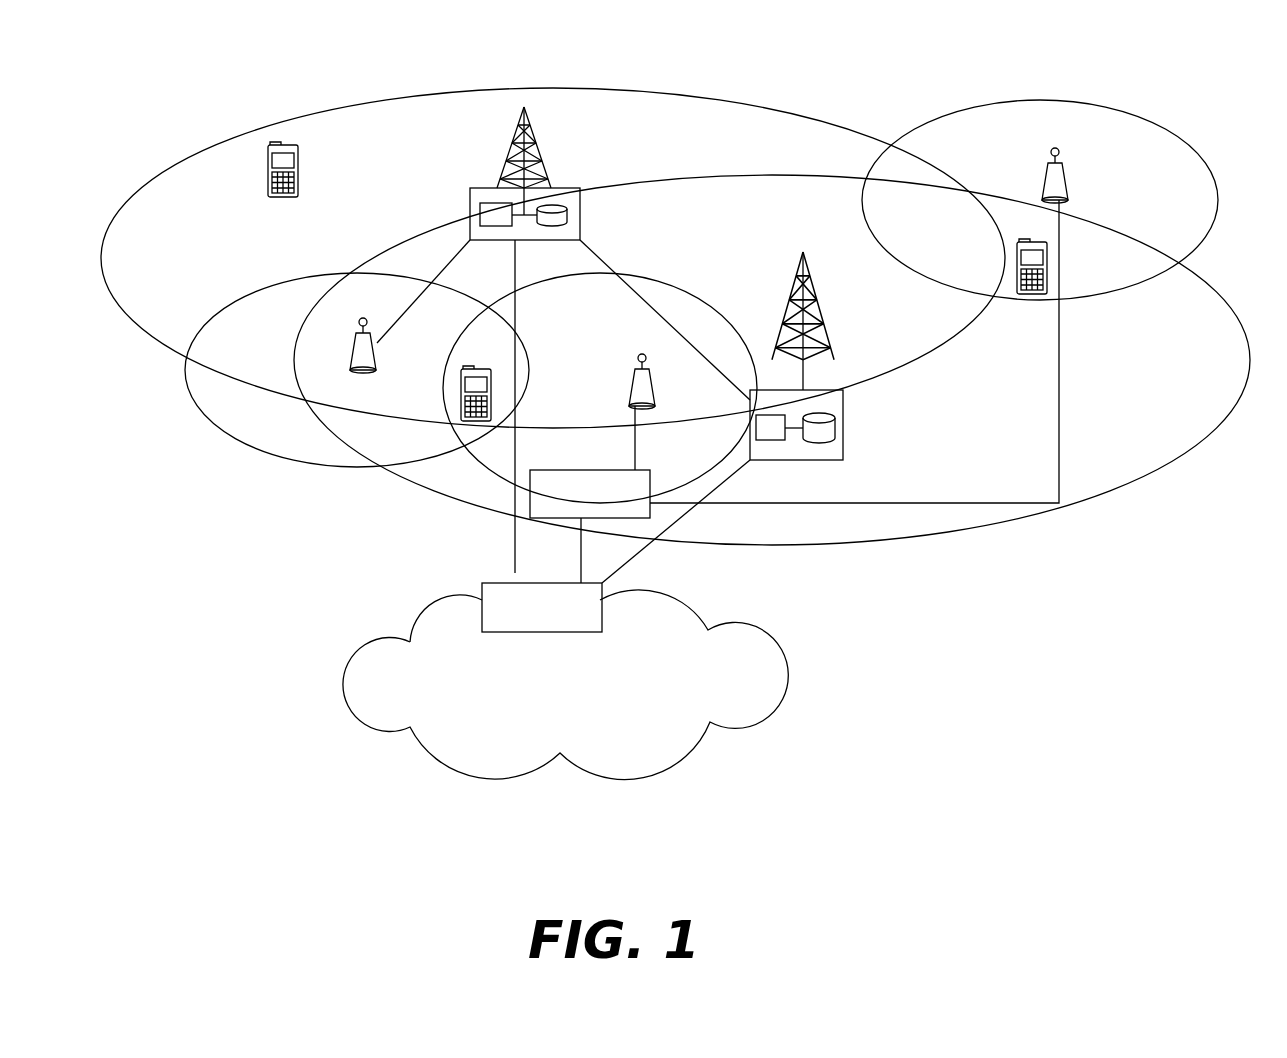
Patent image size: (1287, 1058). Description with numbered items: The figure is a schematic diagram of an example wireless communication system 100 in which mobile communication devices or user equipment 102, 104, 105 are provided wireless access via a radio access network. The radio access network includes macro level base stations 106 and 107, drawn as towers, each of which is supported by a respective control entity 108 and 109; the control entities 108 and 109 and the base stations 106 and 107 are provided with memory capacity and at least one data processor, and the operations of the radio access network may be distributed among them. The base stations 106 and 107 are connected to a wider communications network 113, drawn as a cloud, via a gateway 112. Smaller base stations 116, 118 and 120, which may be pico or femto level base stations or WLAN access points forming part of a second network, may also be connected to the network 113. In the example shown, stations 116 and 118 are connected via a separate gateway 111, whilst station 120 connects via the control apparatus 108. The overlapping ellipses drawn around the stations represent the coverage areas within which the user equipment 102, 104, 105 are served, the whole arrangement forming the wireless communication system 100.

The wireless communication system 100 is at (183, 145).
The user equipment 102 is at (268, 184).
The user equipment 104 is at (462, 405).
The user equipment 105 is at (1030, 298).
The base station 106 is at (497, 163).
The base station 107 is at (825, 325).
The control entity 108 is at (470, 202).
The control entity 109 is at (843, 455).
The gateway 111 is at (530, 512).
The gateway 112 is at (482, 592).
The communications network 113 is at (420, 653).
The smaller base station 116 is at (1046, 173).
The smaller base station 118 is at (631, 388).
The smaller base station 120 is at (351, 355).